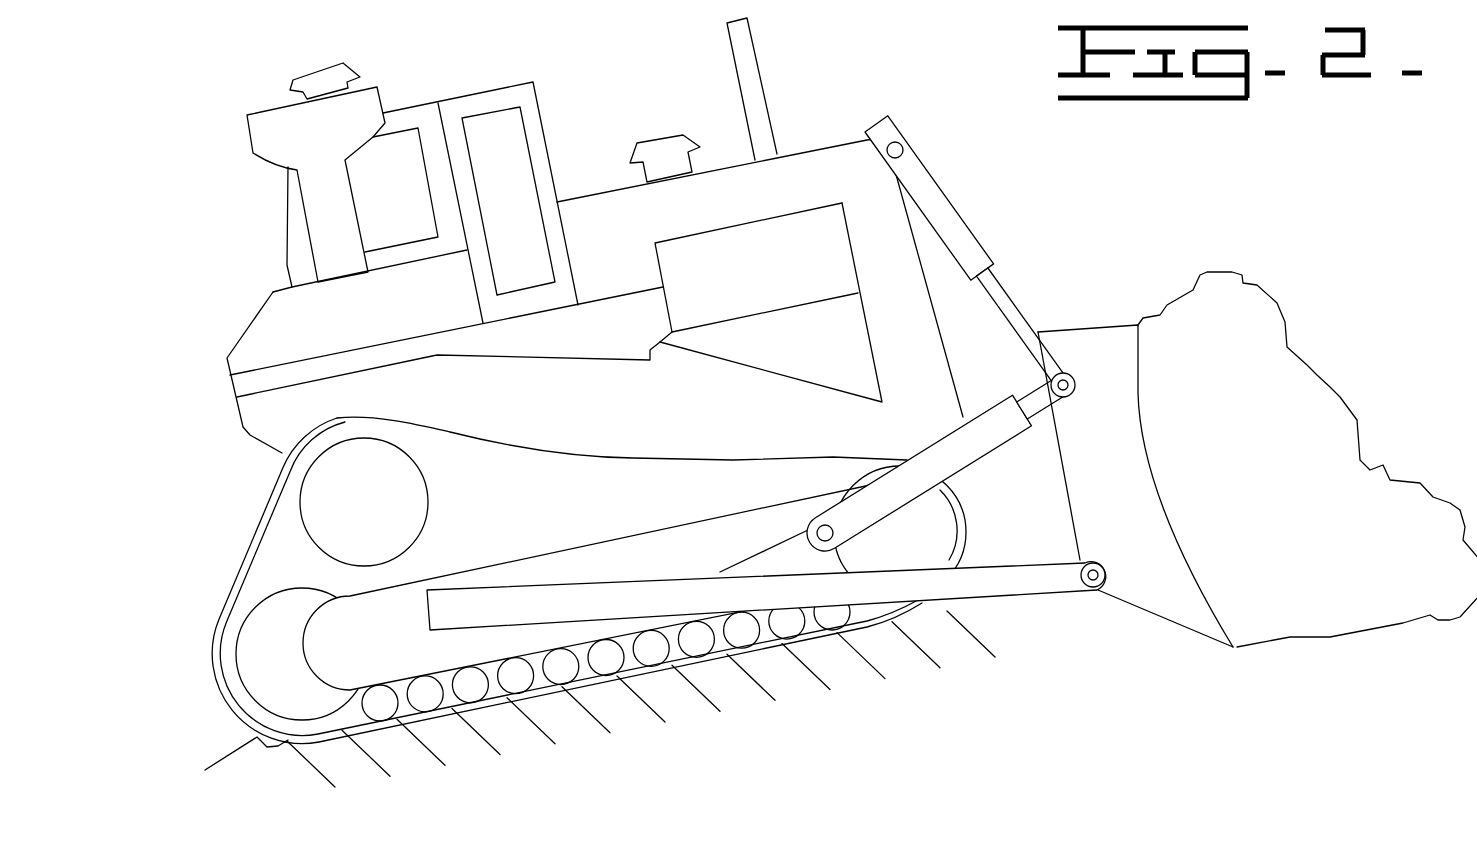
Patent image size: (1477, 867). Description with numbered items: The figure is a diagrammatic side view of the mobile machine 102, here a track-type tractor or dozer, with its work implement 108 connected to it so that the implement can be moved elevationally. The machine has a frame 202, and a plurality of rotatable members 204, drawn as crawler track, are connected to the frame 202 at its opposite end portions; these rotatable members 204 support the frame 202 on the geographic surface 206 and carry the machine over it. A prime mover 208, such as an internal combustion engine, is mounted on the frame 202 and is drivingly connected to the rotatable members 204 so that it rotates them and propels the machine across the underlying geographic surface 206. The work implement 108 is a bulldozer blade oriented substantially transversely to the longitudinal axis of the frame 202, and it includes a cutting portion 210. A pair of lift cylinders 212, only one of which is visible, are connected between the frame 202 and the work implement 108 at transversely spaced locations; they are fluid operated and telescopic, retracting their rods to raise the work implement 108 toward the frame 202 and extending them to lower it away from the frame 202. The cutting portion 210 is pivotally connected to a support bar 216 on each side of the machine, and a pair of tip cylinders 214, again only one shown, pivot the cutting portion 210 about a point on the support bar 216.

The mobile machine 102 is at (253, 755).
The work implement 108 is at (1097, 613).
The frame 202 is at (248, 438).
The rotatable members 204 is at (250, 527).
The geographic surface 206 is at (650, 764).
The prime mover 208 is at (737, 281).
The cutting portion 210 is at (1092, 482).
The lift cylinders 212 is at (953, 213).
The tip cylinders 214 is at (980, 463).
The support bar 216 is at (1003, 600).